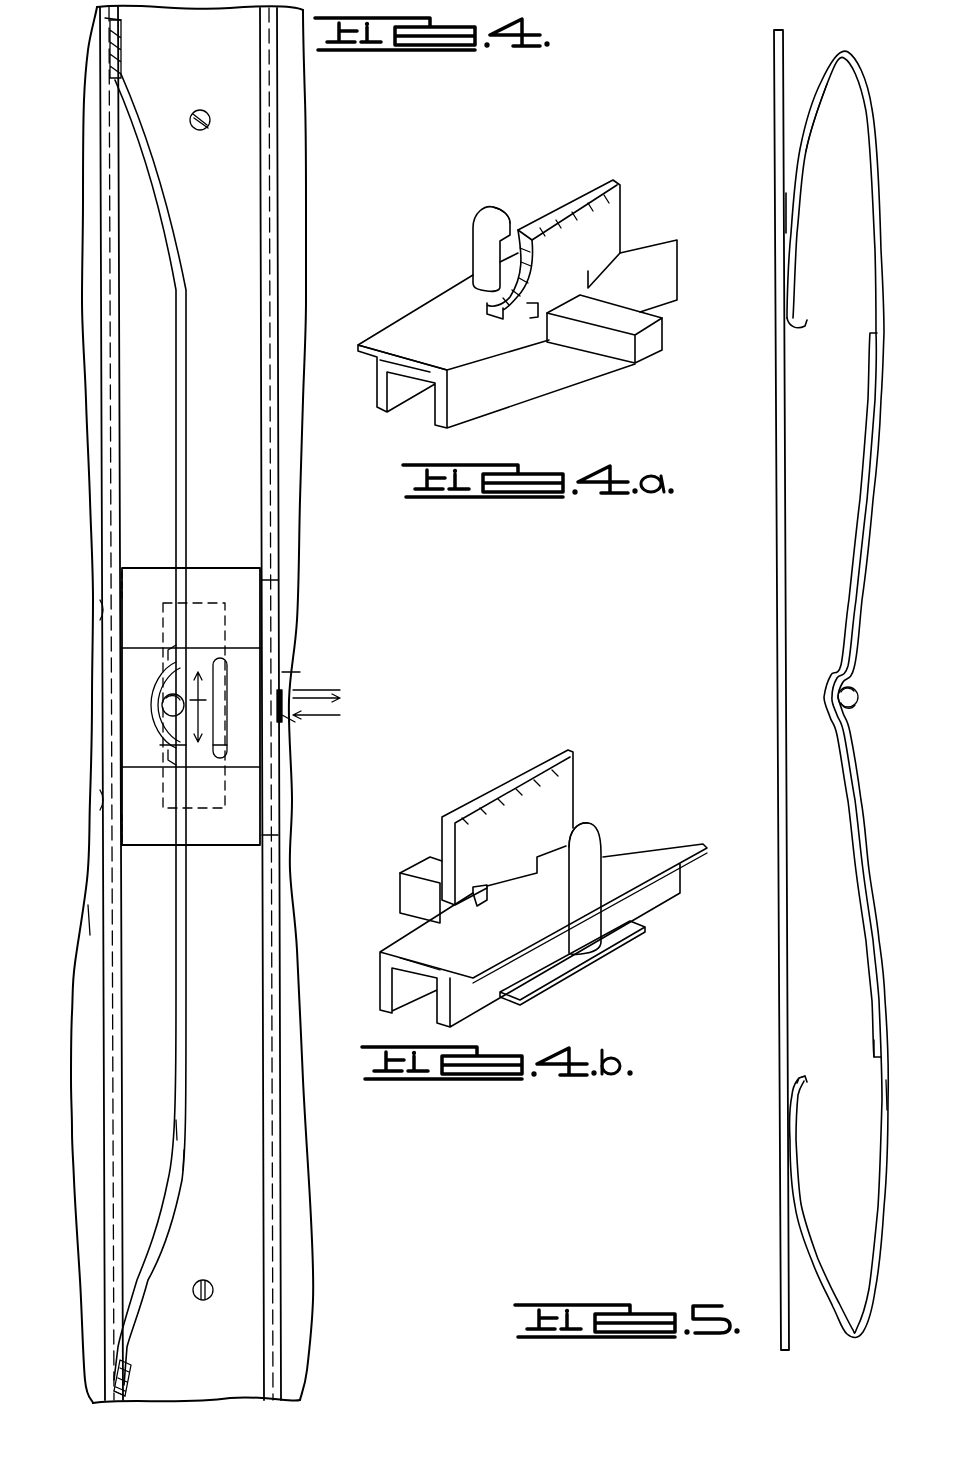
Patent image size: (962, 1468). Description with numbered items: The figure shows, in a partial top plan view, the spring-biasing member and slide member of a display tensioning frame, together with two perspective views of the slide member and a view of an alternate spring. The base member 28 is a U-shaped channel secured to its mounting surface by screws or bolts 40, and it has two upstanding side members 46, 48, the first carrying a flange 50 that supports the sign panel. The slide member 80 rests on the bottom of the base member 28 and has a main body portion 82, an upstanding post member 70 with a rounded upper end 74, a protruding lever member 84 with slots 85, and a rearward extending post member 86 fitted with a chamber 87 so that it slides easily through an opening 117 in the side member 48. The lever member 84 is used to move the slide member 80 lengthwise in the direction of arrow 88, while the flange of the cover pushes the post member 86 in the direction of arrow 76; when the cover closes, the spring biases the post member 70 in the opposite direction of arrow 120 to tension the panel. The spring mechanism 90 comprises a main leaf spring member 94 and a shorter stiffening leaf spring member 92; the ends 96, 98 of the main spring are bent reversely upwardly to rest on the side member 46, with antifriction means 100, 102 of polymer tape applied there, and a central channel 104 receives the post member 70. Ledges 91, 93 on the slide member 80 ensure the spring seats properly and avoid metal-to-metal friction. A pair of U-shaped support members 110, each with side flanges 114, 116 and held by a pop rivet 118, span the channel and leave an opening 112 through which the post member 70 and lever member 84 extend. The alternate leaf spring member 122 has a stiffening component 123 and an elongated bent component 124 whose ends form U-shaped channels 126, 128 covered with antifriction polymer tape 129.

In FIG. 4, the base member 28 is at (232, 201).
In FIG. 5, the base member 28 is at (775, 600).
In FIG. 4, the screws or bolts 40 is at (200, 111).
In FIG. 4, the side member 46 is at (100, 928).
In FIG. 5, the side member 46 is at (775, 492).
In FIG. 4, the side member 48 is at (282, 1110).
In FIG. 4, the flange 50 is at (100, 980).
In FIG. 4, the post member 70 is at (170, 728).
In FIG. 4A, the post member 70 is at (474, 263).
In FIG. 4B, the post member 70 is at (594, 885).
In FIG. 5, the post member 70 is at (858, 702).
In FIG. 4A, the rounded upper end of bracket 74 is at (503, 217).
In FIG. 4B, the rounded upper end of bracket 74 is at (580, 834).
In FIG. 4, the arrow 76 is at (330, 718).
In FIG. 4, the slide member 80 is at (199, 645).
In FIG. 4A, the slide member 80 is at (472, 382).
In FIG. 4B, the slide member 80 is at (382, 985).
In FIG. 4A, the main body portion 82 is at (403, 340).
In FIG. 4B, the main body portion 82 is at (423, 950).
In FIG. 4, the lever member 84 is at (224, 746).
In FIG. 4A, the lever member 84 is at (607, 213).
In FIG. 4B, the lever member 84 is at (564, 774).
In FIG. 4A, the slots 85 is at (592, 276).
In FIG. 4B, the slots 85 is at (476, 904).
In FIG. 4, the post member 86 is at (288, 723).
In FIG. 4A, the post member 86 is at (617, 348).
In FIG. 4B, the post member 86 is at (418, 905).
In FIG. 4A, the chamber 87 is at (650, 323).
In FIG. 4B, the chamber 87 is at (403, 881).
In FIG. 4, the arrow 88 is at (200, 705).
In FIG. 4, the spring mechanism 90 is at (177, 992).
In FIG. 4, the ledge 91 is at (165, 747).
In FIG. 4A, the ledge 91 is at (360, 344).
In FIG. 4B, the ledge 91 is at (663, 877).
In FIG. 4, the leaf spring member 92 is at (186, 1130).
In FIG. 4B, the ledge 93 is at (632, 935).
In FIG. 4, the main leaf spring member 94 is at (177, 1160).
In FIG. 4, the bent end 96 is at (140, 1368).
In FIG. 4, the bent end 98 is at (132, 32).
In FIG. 4, the antifriction means 100 is at (130, 1394).
In FIG. 4, the antifriction means 102 is at (128, 23).
In FIG. 4, the channel 104 is at (160, 703).
In FIG. 5, the channel 104 is at (856, 691).
In FIG. 4, the U-shaped support member 110 is at (250, 828).
In FIG. 4, the opening 112 is at (140, 648).
In FIG. 4, the side flange 114 is at (114, 580).
In FIG. 4, the side flange 116 is at (270, 590).
In FIG. 4, the opening 117 is at (298, 678).
In FIG. 4, the pop rivet 118 is at (102, 603).
In FIG. 4, the arrow 120 is at (318, 688).
In FIG. 5, the leaf spring member 122 is at (868, 948).
In FIG. 5, the stiffening component 123 is at (873, 1040).
In FIG. 5, the elongated bent component 124 is at (889, 1097).
In FIG. 5, the U-shaped channel 126 is at (805, 157).
In FIG. 5, the U-shaped channel 128 is at (806, 1092).
In FIG. 5, the polymer tape 129 is at (795, 327).